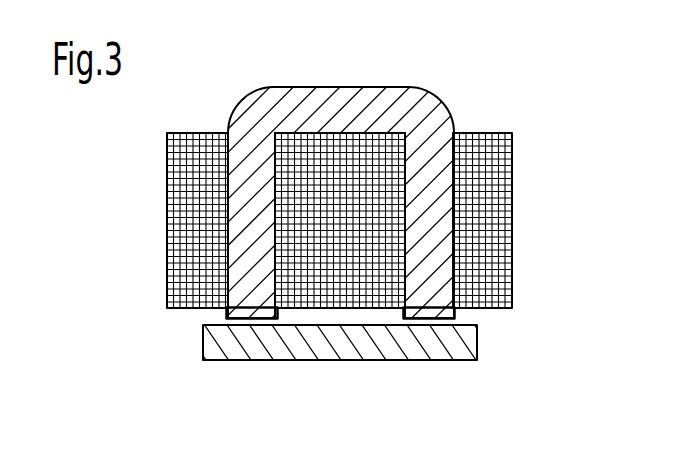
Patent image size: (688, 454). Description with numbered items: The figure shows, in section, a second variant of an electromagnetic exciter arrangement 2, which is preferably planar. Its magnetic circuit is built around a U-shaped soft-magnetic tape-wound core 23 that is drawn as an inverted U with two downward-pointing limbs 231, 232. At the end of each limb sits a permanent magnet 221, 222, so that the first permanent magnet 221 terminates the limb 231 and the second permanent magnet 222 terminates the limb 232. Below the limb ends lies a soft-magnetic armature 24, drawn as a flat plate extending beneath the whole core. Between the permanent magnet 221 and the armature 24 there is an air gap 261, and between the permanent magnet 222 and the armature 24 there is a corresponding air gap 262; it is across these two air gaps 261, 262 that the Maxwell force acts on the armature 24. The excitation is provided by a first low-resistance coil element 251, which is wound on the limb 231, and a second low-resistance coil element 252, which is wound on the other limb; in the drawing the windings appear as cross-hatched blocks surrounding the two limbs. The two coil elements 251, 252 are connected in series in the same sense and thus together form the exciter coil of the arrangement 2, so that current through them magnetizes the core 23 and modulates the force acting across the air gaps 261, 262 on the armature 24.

The electromagnetic exciter arrangement 2 is at (346, 58).
The U-shaped soft-magnetic tape-wound core 23 is at (427, 109).
The limb 231 is at (240, 182).
The limb 232 is at (453, 133).
The permanent magnet 221 is at (227, 312).
The permanent magnet 222 is at (450, 312).
The first low-resistance coil element 251 is at (180, 225).
The second low-resistance coil element 252 is at (502, 205).
The air gap 261 is at (260, 320).
The air gap 262 is at (437, 320).
The soft-magnetic armature 24 is at (397, 350).